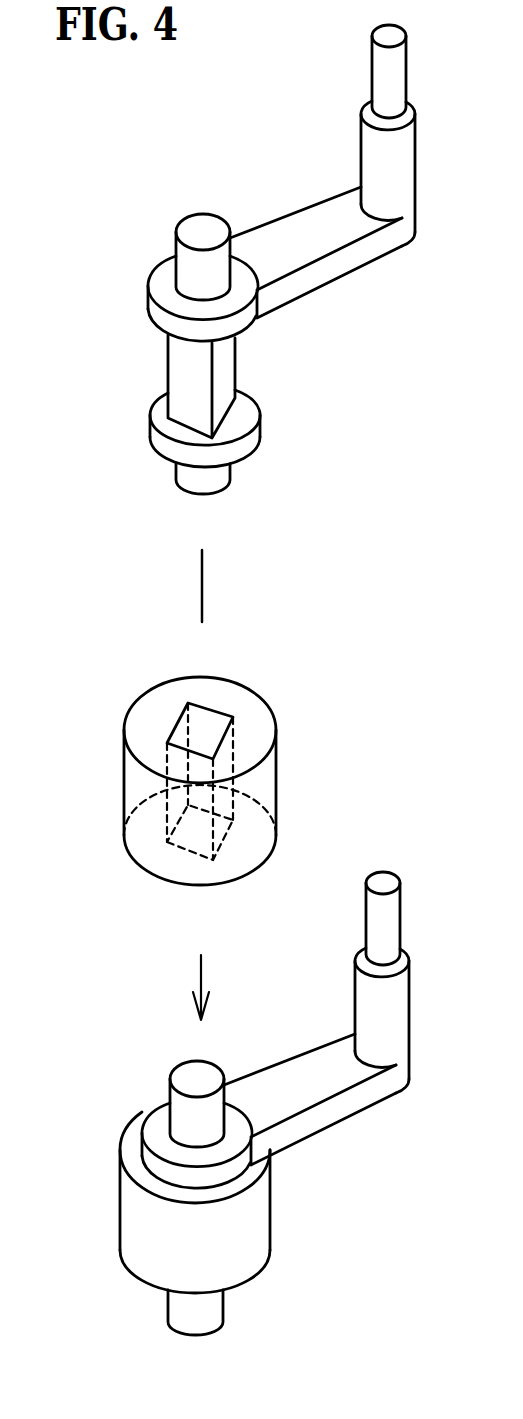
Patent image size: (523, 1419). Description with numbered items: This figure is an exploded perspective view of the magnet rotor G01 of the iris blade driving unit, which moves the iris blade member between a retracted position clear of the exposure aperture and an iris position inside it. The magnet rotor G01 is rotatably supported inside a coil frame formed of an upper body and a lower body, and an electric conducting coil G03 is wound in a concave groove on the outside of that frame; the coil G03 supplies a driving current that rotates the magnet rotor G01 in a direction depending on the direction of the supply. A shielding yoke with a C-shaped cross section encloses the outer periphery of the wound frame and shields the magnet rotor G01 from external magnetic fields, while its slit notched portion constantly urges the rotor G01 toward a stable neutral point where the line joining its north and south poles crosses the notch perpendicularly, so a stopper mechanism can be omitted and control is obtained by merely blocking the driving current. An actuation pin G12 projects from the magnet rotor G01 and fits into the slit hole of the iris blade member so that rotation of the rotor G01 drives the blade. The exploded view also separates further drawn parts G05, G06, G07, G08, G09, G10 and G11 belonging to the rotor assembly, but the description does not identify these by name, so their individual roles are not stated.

The magnet rotor G01 is at (131, 1099).
The electric conducting coil G03 is at (208, 722).
The square shaft G05 is at (188, 378).
The lower flange disk G06 is at (158, 438).
The upper flange disk G07 is at (157, 308).
The lower pin G08 is at (223, 475).
The upper pin G09 is at (185, 260).
The arm G10 is at (294, 230).
The boss cylinder G11 is at (370, 144).
The actuation pin G12 is at (385, 63).